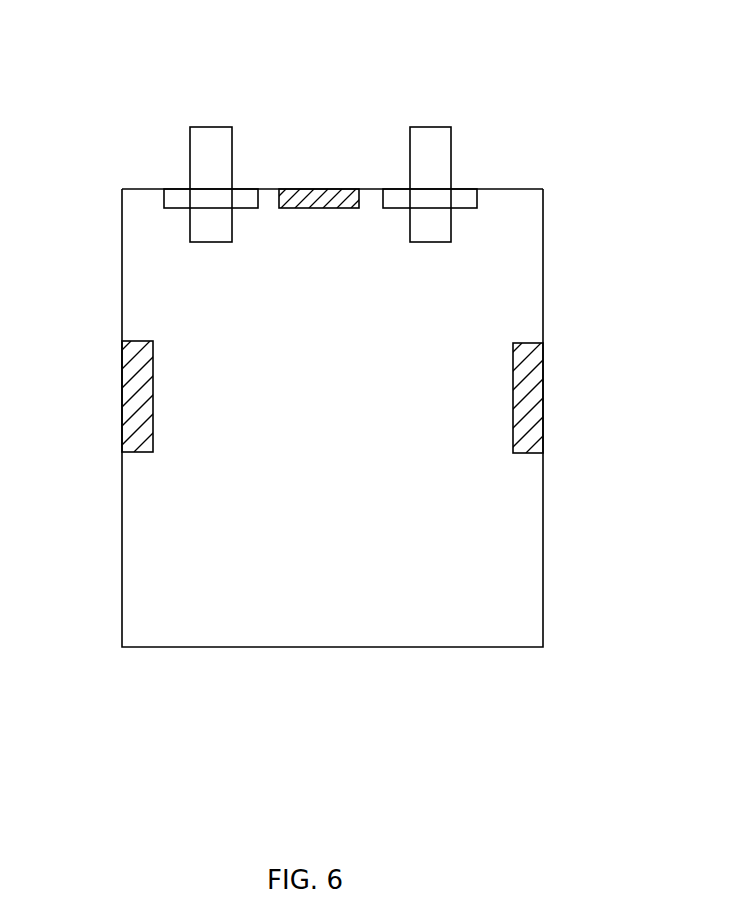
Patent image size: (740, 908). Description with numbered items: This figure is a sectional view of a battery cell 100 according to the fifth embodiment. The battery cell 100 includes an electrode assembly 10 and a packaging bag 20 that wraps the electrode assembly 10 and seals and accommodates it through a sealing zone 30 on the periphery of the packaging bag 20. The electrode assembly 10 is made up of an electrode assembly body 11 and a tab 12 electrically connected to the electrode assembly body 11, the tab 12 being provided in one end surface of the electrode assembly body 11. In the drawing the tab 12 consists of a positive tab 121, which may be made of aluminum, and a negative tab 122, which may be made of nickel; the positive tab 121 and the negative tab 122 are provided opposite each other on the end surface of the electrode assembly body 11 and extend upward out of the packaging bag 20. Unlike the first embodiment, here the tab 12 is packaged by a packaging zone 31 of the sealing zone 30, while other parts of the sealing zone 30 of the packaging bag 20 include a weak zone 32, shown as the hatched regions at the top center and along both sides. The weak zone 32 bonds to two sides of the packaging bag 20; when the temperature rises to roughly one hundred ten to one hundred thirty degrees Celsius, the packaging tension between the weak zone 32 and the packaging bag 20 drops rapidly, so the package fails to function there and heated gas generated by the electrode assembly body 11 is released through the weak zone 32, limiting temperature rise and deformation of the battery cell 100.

The battery cell 100 is at (376, 42).
The electrode assembly 10 is at (198, 91).
The electrode assembly body 11 is at (139, 207).
The tab 12 is at (353, 105).
The positive tab 121 is at (222, 142).
The negative tab 122 is at (423, 150).
The packaging bag 20 is at (543, 523).
The sealing zone 30 is at (608, 333).
The packaging zone 31 is at (463, 201).
The weak zone 32 is at (286, 208).